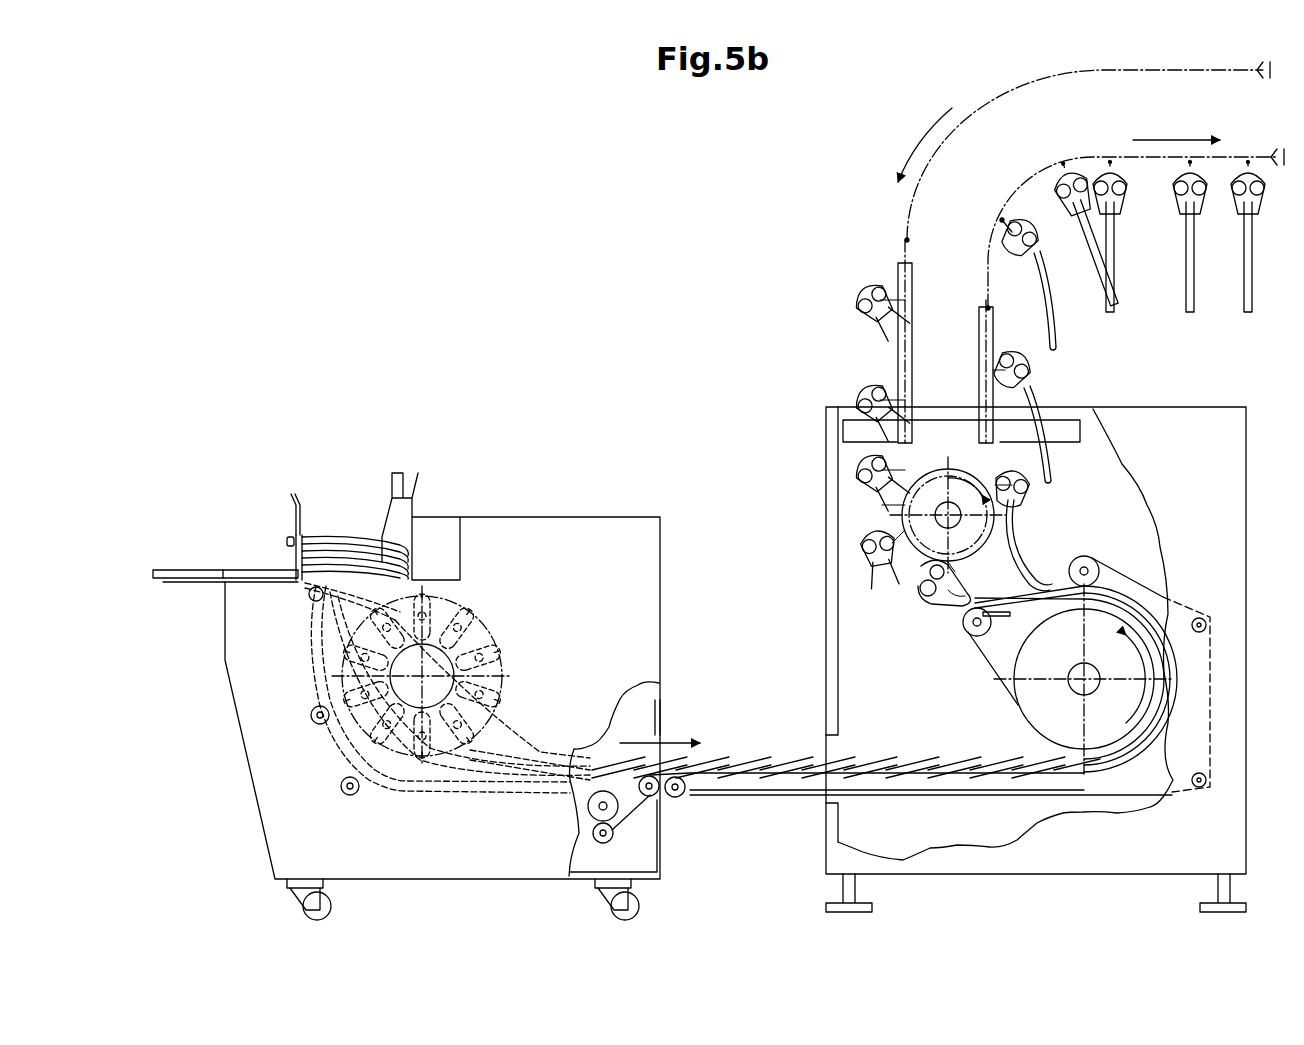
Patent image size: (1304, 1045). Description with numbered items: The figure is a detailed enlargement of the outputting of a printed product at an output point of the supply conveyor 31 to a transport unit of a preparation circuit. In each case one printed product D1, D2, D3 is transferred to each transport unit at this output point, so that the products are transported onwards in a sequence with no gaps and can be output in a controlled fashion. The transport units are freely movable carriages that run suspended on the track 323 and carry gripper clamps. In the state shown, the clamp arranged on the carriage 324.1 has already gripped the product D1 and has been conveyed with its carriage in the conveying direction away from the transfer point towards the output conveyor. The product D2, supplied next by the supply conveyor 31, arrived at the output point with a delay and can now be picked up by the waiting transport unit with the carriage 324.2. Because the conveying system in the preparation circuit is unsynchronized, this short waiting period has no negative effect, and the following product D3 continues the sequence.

The supply conveyor 31 is at (780, 808).
The track 323 is at (905, 238).
The carriage 324.1 is at (1012, 457).
The carriage 324.2 is at (905, 598).
The printed product D1 is at (1026, 570).
The printed product D2 is at (946, 600).
The printed product D3 is at (1000, 612).